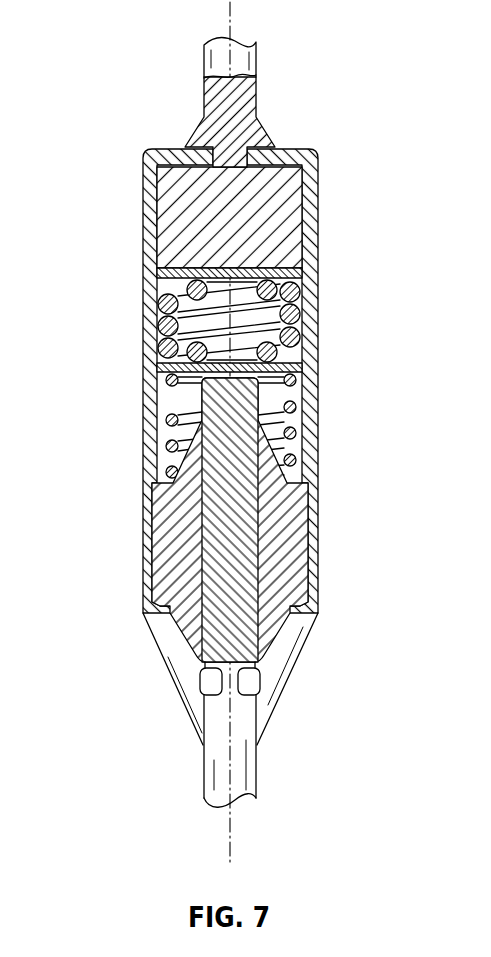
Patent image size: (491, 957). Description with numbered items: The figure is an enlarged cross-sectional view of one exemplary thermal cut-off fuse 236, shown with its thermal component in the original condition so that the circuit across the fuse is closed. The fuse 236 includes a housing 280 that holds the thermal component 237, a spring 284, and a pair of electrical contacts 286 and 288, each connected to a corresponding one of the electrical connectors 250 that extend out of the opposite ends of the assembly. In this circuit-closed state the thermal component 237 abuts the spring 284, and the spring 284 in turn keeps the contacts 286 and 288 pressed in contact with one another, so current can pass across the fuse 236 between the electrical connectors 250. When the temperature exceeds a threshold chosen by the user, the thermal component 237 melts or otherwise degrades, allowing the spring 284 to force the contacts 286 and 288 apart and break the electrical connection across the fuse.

The electrical connector 250 is at (256, 78).
The thermal cut-off fuse 236 is at (138, 388).
The thermal component 237 is at (283, 232).
The spring 284 is at (158, 287).
The electrical contact 286 is at (290, 367).
The housing 280 is at (317, 515).
The electrical contact 288 is at (242, 407).